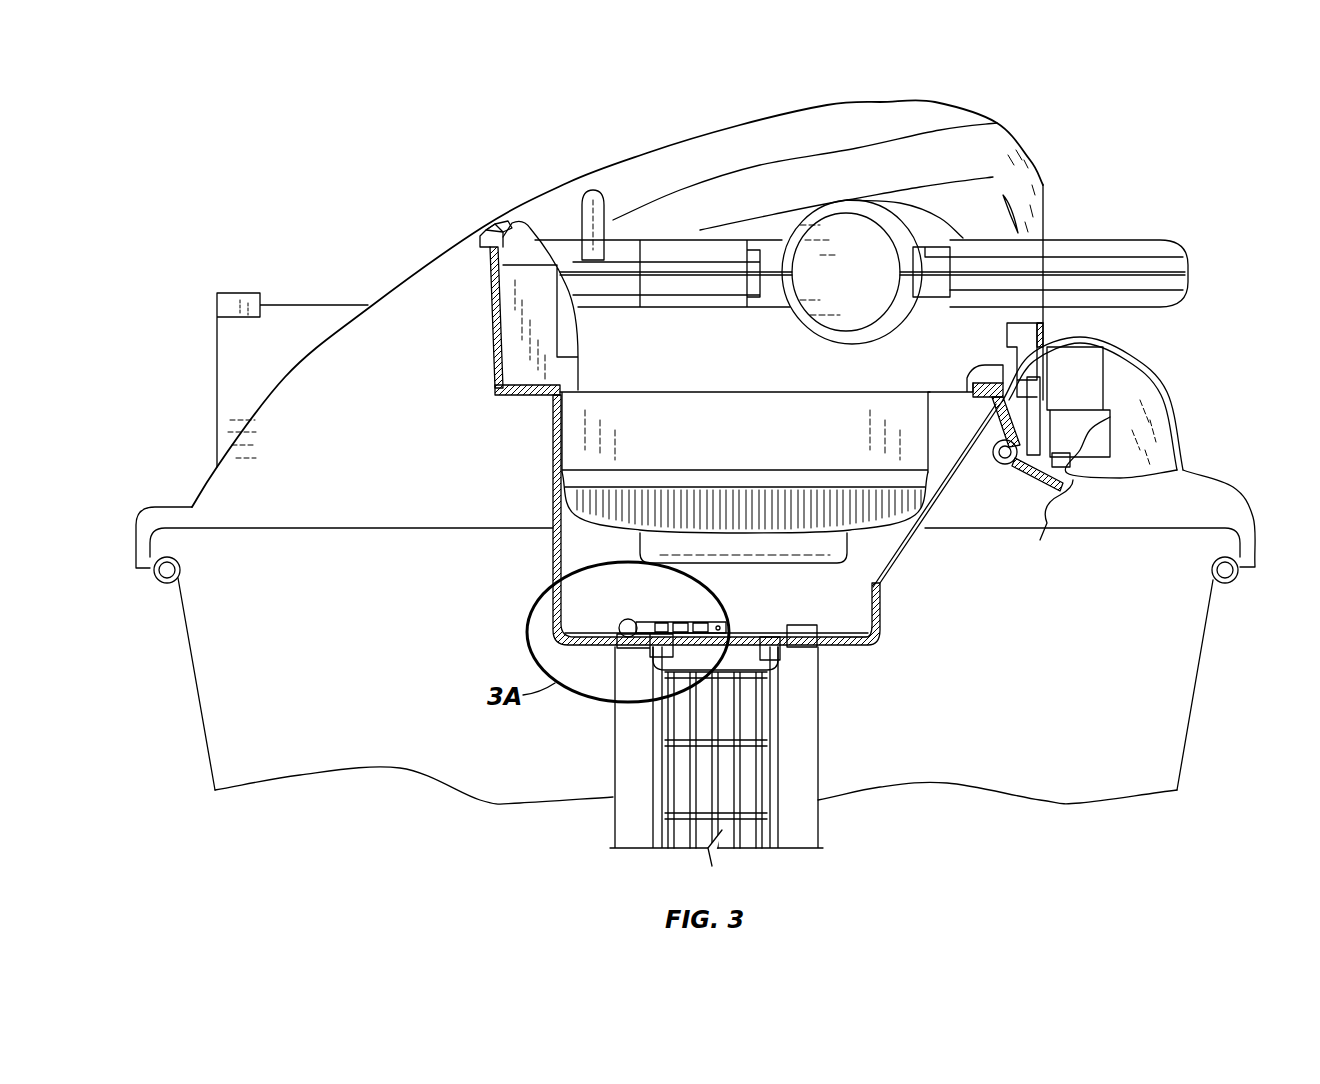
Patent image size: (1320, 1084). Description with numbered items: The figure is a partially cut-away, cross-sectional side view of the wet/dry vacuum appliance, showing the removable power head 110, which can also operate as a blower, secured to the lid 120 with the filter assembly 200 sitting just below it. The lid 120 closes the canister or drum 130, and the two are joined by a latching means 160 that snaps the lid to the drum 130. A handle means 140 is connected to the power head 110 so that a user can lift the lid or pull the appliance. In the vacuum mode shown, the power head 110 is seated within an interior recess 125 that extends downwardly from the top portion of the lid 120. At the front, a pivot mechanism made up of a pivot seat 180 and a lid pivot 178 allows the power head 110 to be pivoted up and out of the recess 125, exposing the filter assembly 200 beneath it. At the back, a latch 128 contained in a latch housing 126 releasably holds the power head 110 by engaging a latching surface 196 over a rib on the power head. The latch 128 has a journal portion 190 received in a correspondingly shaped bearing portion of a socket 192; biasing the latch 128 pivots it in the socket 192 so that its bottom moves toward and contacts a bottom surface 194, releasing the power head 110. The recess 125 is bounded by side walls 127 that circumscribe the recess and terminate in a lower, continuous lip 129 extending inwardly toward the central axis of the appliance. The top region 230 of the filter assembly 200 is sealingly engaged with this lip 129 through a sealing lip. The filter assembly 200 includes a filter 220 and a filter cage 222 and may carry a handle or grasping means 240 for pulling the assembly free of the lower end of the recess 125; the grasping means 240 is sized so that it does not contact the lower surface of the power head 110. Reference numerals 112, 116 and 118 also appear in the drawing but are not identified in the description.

The power head 110 is at (970, 112).
The cover portion 112 is at (217, 335).
The inlet 116 is at (845, 247).
The motor 118 is at (786, 602).
The lid 120 is at (1217, 482).
The interior recess 125 is at (552, 492).
The latch housing 126 is at (1143, 407).
The side walls 127 is at (547, 563).
The latch 128 is at (1082, 337).
The lower continuous lip 129 is at (833, 653).
The drum 130 is at (198, 693).
The handle means 140 is at (1157, 240).
The latching means 160 is at (168, 583).
The lid pivot 178 is at (497, 220).
The pivot seat 180 is at (483, 230).
The journal portion 190 is at (993, 463).
The socket 192 is at (1040, 520).
The bottom surface 194 is at (1067, 480).
The latching surface 196 is at (1007, 383).
The filter assembly 200 is at (749, 756).
The filter 220 is at (800, 778).
The filter cage 222 is at (660, 778).
The top region 230 is at (803, 630).
The grasping means 240 is at (657, 617).